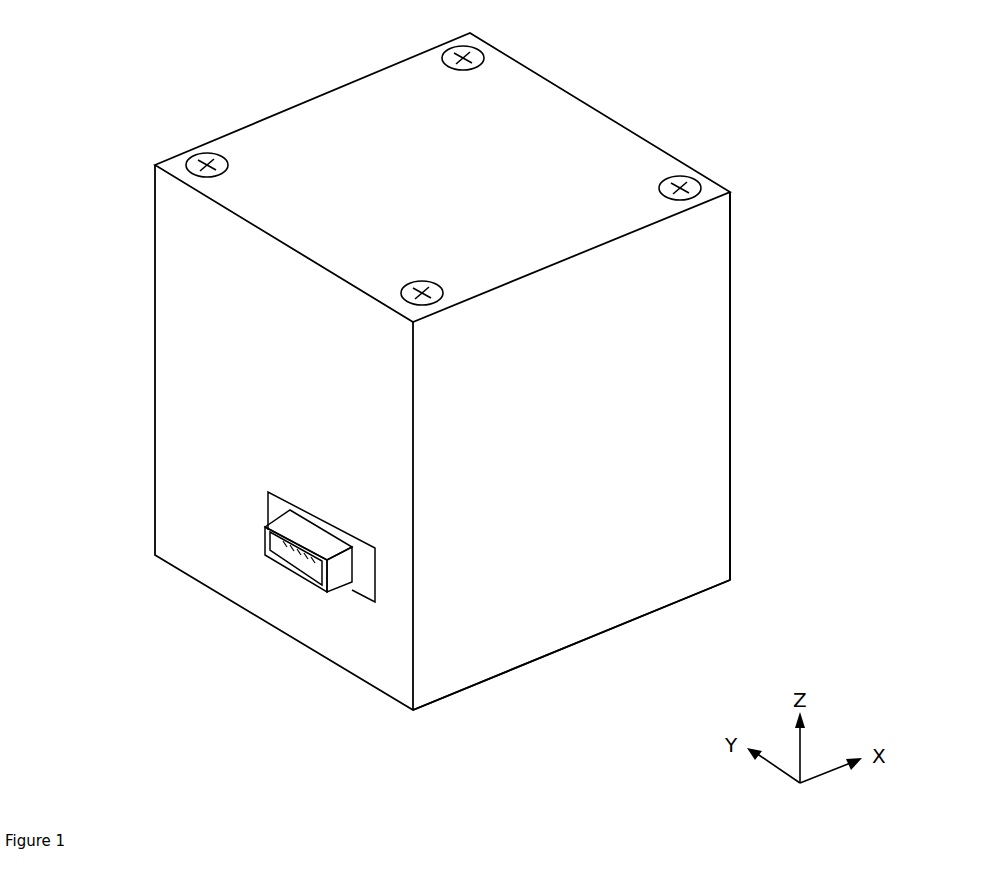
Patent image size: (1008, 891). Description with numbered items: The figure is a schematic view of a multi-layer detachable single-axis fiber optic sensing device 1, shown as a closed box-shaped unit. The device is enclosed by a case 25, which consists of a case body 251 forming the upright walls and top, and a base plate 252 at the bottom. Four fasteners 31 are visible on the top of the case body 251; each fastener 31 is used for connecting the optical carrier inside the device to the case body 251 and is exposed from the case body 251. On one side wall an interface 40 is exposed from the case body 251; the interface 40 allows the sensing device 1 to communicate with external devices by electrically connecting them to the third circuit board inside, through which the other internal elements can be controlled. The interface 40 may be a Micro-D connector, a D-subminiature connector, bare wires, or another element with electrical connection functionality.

The multi-layer detachable single-axis fiber optic sensing device 1 is at (736, 108).
The fastener 31 is at (205, 163).
The case 25 is at (668, 451).
The case body 251 is at (703, 357).
The base plate 252 is at (634, 627).
The interface 40 is at (280, 563).